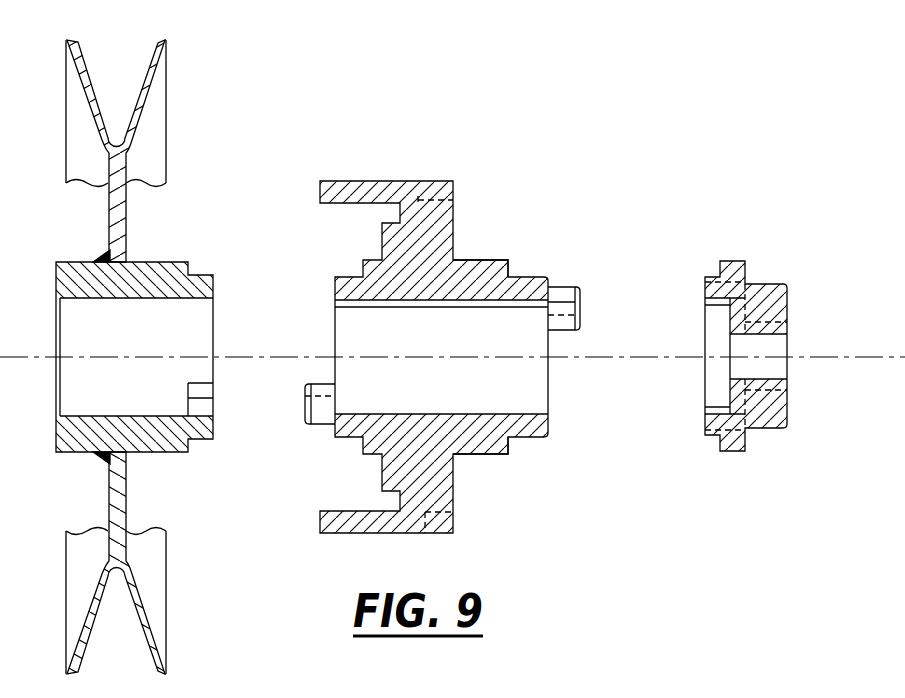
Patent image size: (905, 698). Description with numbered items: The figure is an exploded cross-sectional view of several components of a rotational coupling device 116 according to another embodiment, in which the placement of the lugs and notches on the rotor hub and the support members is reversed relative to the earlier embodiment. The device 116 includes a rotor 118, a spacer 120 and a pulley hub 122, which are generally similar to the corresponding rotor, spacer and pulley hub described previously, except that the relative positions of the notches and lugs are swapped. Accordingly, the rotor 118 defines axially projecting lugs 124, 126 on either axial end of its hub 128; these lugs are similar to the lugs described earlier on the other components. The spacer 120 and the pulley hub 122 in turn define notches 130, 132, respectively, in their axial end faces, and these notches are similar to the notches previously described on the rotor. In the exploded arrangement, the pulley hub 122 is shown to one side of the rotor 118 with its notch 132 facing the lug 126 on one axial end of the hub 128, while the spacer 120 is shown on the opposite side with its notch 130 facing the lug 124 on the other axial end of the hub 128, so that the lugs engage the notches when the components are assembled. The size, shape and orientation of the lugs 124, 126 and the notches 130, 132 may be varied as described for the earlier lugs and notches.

The device 116 is at (496, 108).
The rotor 118 is at (467, 312).
The spacer 120 is at (741, 296).
The pulley hub 122 is at (155, 357).
The lug 124 is at (565, 332).
The lug 126 is at (318, 424).
The hub 128 is at (500, 268).
The notch 130 is at (712, 306).
The notch 132 is at (200, 406).